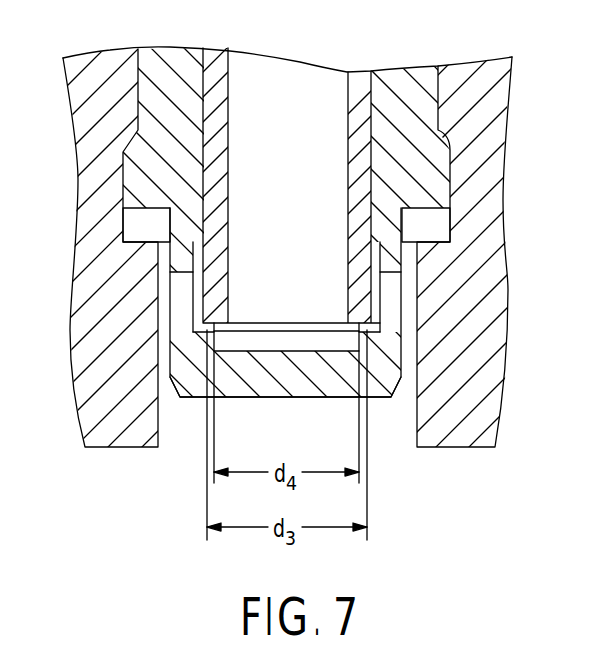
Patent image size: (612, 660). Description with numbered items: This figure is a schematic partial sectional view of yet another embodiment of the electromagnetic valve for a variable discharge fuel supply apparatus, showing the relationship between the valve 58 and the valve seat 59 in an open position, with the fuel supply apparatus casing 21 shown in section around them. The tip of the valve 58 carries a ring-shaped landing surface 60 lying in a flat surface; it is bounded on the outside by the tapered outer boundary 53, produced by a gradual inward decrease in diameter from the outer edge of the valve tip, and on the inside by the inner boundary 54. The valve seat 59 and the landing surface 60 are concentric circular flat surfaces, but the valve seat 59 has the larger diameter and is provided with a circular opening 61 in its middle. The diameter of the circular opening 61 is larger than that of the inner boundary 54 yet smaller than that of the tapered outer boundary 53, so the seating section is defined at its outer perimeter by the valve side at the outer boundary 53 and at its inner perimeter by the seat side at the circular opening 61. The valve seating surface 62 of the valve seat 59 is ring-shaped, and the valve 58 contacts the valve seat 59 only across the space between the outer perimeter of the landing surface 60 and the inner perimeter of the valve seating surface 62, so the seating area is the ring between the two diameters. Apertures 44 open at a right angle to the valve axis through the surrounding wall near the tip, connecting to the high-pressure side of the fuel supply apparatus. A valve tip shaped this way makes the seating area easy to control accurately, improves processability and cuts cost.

The fuel supply apparatus casing 21 is at (78, 167).
The apertures 44 is at (182, 280).
The outer boundary 53 is at (372, 322).
The inner boundary 54 is at (347, 130).
The valve 58 is at (285, 72).
The valve seat 59 is at (380, 388).
The landing surface 60 is at (357, 328).
The circular opening 61 is at (247, 348).
The valve seating surface 62 is at (213, 333).